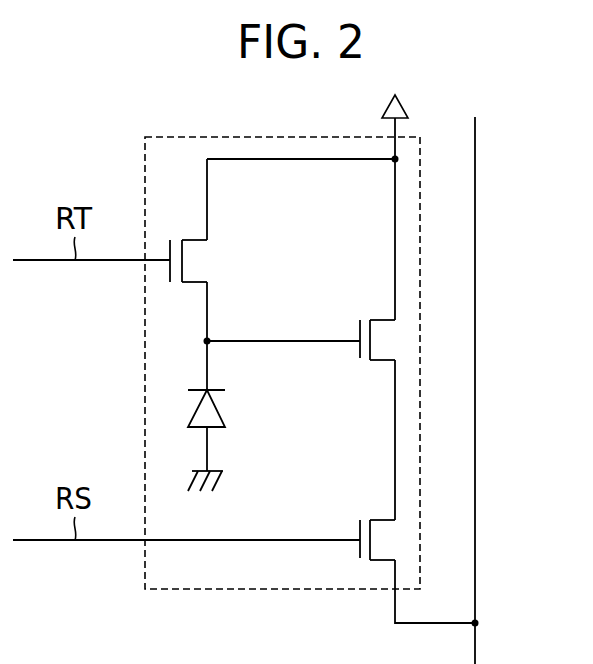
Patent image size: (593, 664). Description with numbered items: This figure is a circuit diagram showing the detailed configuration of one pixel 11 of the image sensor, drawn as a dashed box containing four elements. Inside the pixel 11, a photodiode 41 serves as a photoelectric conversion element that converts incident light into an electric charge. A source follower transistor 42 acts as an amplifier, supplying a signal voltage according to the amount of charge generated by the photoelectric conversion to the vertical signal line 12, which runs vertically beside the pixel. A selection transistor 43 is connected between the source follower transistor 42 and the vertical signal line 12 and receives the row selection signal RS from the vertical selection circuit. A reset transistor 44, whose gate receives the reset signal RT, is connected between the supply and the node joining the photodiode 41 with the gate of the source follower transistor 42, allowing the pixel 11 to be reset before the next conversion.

The pixel 11 is at (172, 137).
The vertical signal line 12 is at (477, 197).
The photodiode 41 is at (211, 384).
The source follower transistor 42 is at (358, 325).
The selection transistor 43 is at (358, 525).
The reset transistor 44 is at (170, 268).